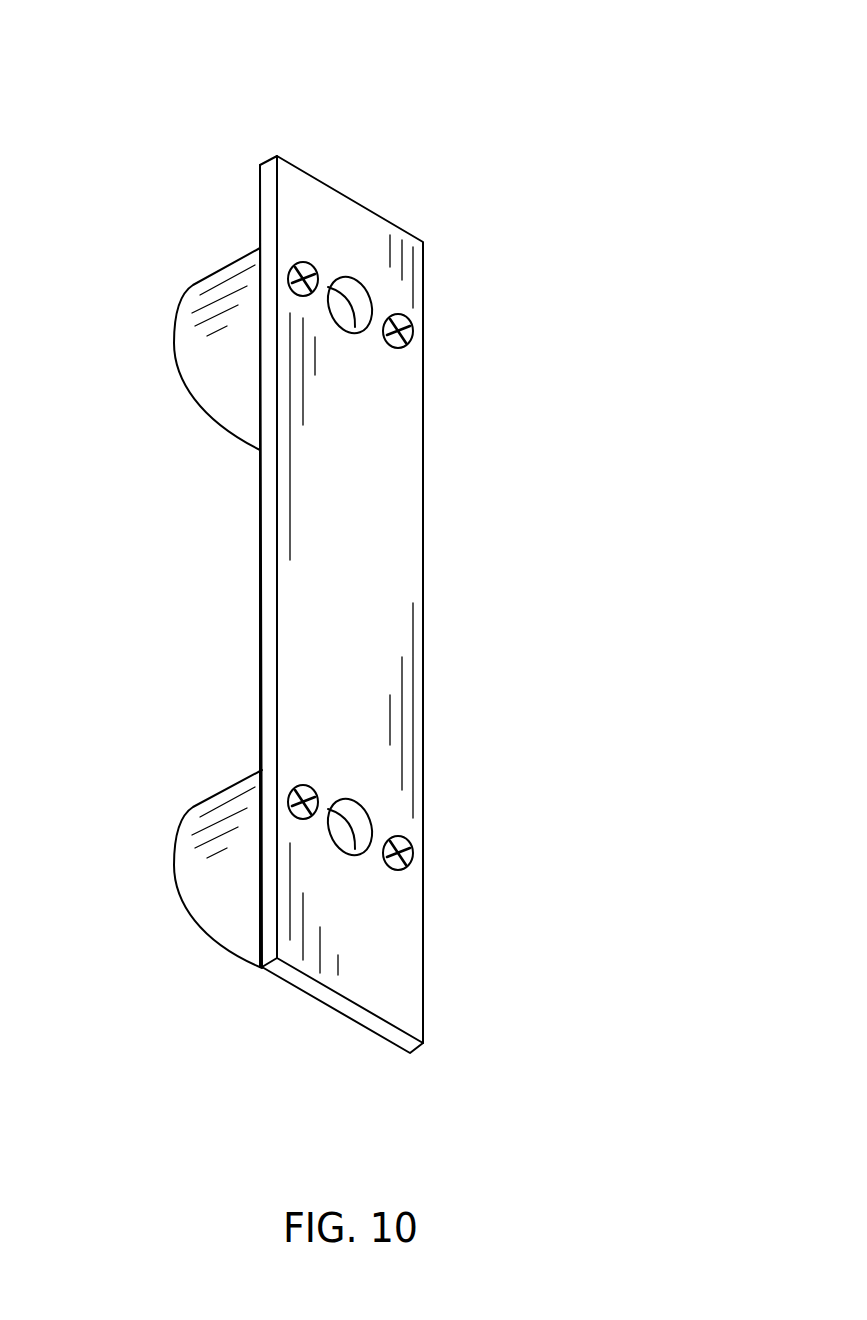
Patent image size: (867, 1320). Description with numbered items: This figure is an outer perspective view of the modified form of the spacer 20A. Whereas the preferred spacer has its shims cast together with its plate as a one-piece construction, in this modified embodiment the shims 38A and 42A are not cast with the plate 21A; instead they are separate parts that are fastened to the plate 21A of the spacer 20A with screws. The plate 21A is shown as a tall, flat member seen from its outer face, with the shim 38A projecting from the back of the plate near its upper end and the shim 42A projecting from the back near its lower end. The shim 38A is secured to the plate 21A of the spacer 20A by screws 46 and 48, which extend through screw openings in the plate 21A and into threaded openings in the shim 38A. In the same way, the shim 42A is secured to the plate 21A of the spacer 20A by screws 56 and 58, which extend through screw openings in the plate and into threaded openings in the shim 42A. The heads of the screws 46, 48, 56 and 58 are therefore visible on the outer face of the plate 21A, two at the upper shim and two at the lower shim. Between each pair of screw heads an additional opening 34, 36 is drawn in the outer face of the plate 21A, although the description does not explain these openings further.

The spacer 20A is at (402, 194).
The plate 21A is at (399, 498).
The upper hole 34 is at (355, 307).
The lower hole 36 is at (350, 820).
The shim 38A is at (208, 386).
The shim 42A is at (177, 863).
The screw 46 is at (305, 263).
The screw 48 is at (407, 327).
The screw 56 is at (303, 786).
The screw 58 is at (404, 838).